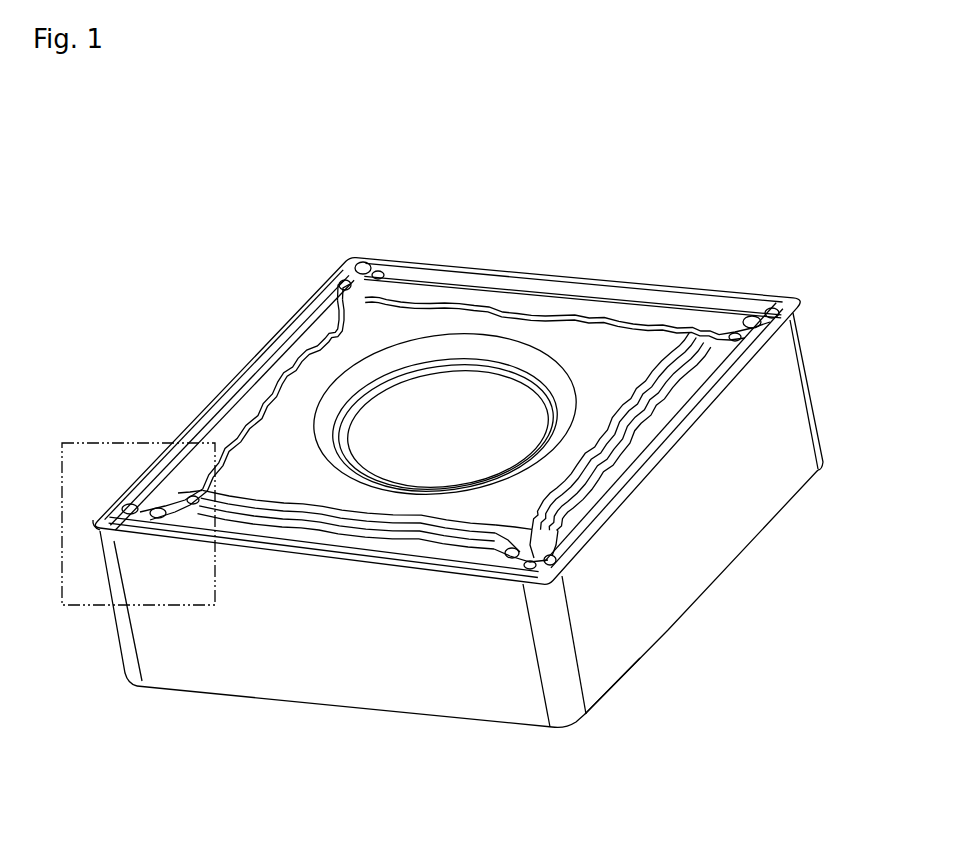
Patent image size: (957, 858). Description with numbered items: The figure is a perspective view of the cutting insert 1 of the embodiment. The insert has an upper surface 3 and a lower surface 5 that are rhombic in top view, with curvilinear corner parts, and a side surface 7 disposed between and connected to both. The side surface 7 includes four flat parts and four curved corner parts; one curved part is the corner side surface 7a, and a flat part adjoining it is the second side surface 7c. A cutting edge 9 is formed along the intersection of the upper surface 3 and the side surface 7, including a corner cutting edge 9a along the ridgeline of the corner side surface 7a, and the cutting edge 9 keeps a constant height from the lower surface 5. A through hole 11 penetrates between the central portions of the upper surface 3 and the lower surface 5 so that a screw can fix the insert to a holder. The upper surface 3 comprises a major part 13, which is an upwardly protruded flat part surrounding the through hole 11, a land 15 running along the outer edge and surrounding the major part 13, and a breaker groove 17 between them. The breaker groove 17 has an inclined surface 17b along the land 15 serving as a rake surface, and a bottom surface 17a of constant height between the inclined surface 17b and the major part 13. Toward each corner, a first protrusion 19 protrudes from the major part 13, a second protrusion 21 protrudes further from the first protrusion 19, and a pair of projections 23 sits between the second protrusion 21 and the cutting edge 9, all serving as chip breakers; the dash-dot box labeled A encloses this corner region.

The cutting insert 1 is at (415, 187).
The upper surface 3 is at (419, 456).
The lower surface 5 is at (668, 630).
The side surface 7 is at (444, 565).
The corner side surface 7a is at (133, 655).
The second side surface 7c is at (468, 683).
The cutting edge 9 is at (104, 548).
The corner cutting edge 9a is at (96, 525).
The through hole 11 is at (507, 427).
The major part 13 is at (608, 347).
The land 15 is at (333, 562).
The breaker groove 17 is at (320, 198).
The bottom surface 17a is at (322, 352).
The inclined surface 17b is at (273, 352).
The first protrusion 19 is at (178, 498).
The second protrusion 21 is at (172, 550).
The pair of projections 23 is at (122, 507).
The enlarged region A is at (98, 443).